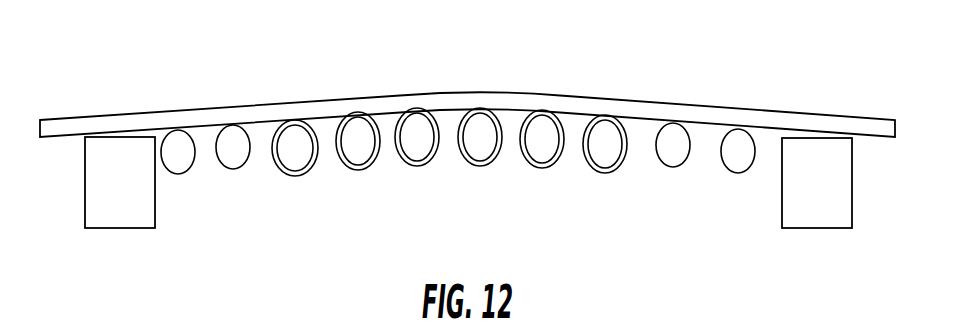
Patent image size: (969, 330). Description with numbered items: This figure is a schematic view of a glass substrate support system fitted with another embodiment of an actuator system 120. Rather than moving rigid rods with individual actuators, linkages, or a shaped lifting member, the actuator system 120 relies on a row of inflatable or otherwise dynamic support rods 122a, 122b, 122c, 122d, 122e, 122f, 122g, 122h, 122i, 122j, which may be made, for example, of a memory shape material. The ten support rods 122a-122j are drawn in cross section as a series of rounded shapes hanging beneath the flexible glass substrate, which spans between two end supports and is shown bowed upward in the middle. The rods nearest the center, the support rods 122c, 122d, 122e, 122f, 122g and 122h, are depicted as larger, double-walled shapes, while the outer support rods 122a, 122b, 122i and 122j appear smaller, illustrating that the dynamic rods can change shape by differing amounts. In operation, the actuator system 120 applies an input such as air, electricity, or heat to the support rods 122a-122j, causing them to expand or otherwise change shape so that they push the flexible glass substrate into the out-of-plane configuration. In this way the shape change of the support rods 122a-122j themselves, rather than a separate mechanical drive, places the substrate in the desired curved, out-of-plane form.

The actuator system 120 is at (345, 197).
The dynamic support rod 122a is at (178, 148).
The dynamic support rod 122b is at (232, 145).
The dynamic support rod 122c is at (295, 138).
The dynamic support rod 122d is at (357, 130).
The dynamic support rod 122e is at (415, 128).
The dynamic support rod 122f is at (480, 128).
The dynamic support rod 122g is at (542, 130).
The dynamic support rod 122h is at (605, 135).
The dynamic support rod 122i is at (677, 137).
The dynamic support rod 122j is at (738, 147).